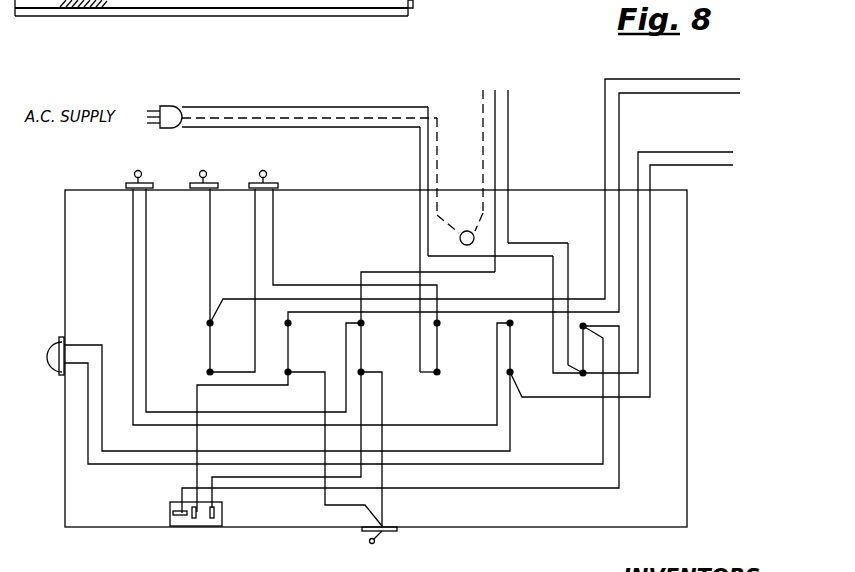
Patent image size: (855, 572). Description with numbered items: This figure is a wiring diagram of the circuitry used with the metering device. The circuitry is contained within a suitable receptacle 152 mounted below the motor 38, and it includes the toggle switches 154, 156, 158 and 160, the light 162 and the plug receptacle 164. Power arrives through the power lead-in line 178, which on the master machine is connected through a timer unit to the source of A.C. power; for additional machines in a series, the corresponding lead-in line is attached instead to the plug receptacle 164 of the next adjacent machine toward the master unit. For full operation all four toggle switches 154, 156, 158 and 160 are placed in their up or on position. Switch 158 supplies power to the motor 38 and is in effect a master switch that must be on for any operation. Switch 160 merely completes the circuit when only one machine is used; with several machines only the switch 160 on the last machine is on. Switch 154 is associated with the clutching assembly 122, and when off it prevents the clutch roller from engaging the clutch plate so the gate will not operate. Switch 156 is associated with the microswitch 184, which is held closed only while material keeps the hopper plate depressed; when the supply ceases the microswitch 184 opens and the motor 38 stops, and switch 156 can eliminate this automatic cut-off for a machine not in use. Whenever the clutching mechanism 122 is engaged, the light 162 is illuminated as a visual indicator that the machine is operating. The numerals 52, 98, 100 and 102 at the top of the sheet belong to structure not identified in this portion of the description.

The motor 38 is at (542, 62).
The tray 52 is at (364, 0).
The slide plate 98 is at (206, 0).
The support plate 100 is at (147, 0).
The guide 102 is at (316, 0).
The clutching assembly 122 is at (754, 156).
The receptacle 152 is at (84, 527).
The toggle switch 154 is at (126, 183).
The toggle switch 156 is at (191, 183).
The master switch 158 is at (251, 183).
The toggle switch 160 is at (390, 532).
The light 162 is at (57, 371).
The plug receptacle 164 is at (188, 527).
The power lead-in line 178 is at (362, 99).
The microswitch 184 is at (753, 71).